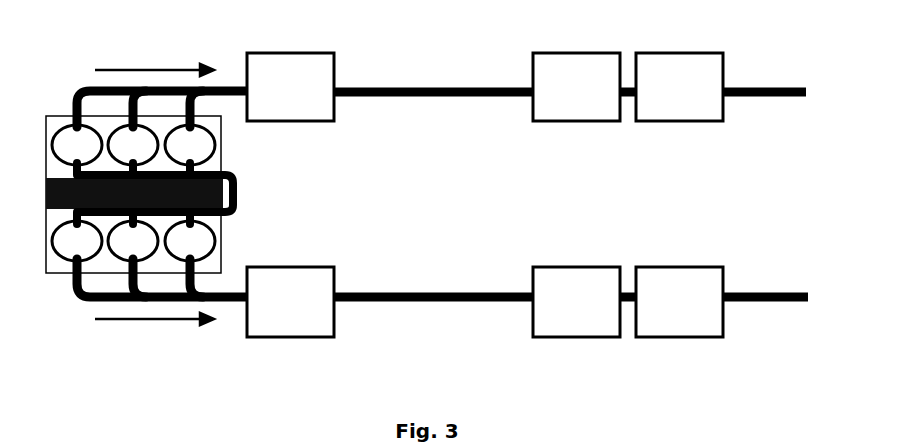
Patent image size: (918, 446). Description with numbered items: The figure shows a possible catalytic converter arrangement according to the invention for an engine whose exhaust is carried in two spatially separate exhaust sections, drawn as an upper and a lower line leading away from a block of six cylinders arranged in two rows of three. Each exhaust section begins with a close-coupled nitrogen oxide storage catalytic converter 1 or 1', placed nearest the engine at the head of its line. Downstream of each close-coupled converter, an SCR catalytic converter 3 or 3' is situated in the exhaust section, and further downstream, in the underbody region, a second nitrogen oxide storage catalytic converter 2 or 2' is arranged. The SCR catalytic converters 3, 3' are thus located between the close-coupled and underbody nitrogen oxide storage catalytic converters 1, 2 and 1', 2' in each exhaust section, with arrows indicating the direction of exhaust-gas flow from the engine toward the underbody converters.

The close-coupled nitrogen oxide storage catalytic converter 1 is at (290, 87).
The SCR catalytic converter 3 is at (576, 87).
The nitrogen oxide storage catalytic converter in the underbody region 2 is at (679, 87).
The close-coupled nitrogen oxide storage catalytic converter 1' is at (290, 302).
The SCR catalytic converter 3' is at (576, 302).
The nitrogen oxide storage catalytic converter in the underbody region 2' is at (679, 302).